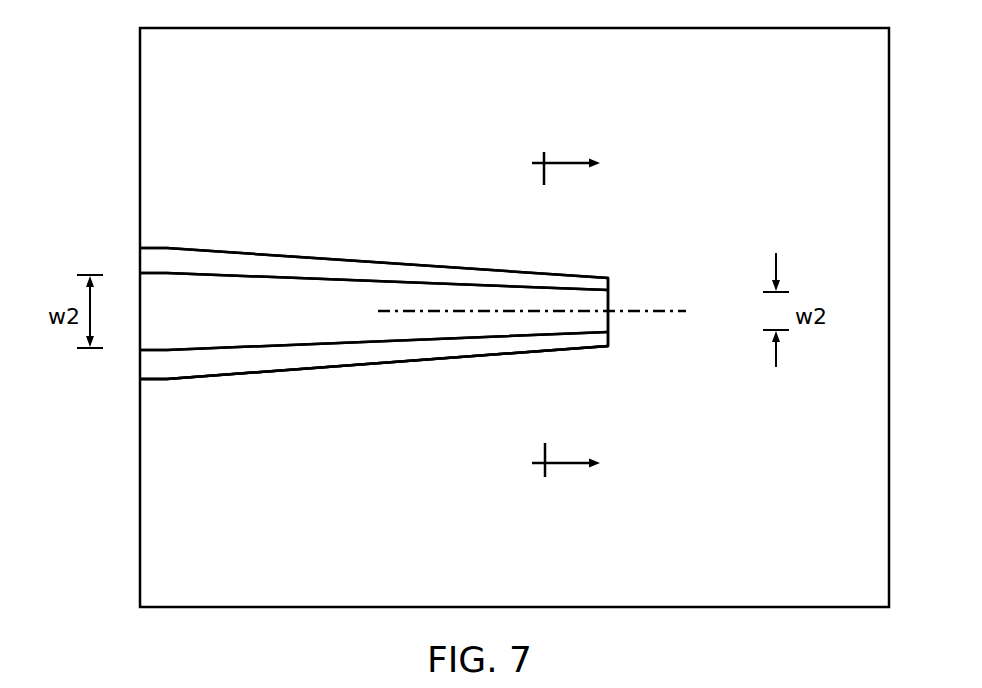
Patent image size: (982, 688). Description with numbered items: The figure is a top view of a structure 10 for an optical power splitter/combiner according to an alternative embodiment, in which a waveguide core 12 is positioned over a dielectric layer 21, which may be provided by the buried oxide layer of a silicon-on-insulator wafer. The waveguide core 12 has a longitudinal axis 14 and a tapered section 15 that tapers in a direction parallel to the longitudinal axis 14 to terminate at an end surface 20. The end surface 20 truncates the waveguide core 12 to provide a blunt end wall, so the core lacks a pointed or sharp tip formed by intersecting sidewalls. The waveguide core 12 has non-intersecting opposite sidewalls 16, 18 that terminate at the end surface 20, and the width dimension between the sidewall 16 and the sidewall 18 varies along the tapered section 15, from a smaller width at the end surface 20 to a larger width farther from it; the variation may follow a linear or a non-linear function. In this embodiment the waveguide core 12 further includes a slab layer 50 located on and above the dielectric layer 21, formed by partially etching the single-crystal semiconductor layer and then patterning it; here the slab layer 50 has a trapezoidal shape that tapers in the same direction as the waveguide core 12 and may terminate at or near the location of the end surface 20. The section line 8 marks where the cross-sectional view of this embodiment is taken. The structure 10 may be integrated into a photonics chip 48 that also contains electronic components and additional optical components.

The photonics chip 48 is at (122, 58).
The structure 10 is at (297, 100).
The waveguide core 12 is at (249, 266).
The sidewall 16 is at (358, 282).
The tapered section 15 is at (290, 310).
The sidewall 18 is at (403, 340).
The slab layer 50 is at (258, 359).
The end surface 20 is at (609, 312).
The longitudinal axis 14 is at (643, 310).
The dielectric layer 21 is at (245, 560).
The section line 8 is at (579, 316).